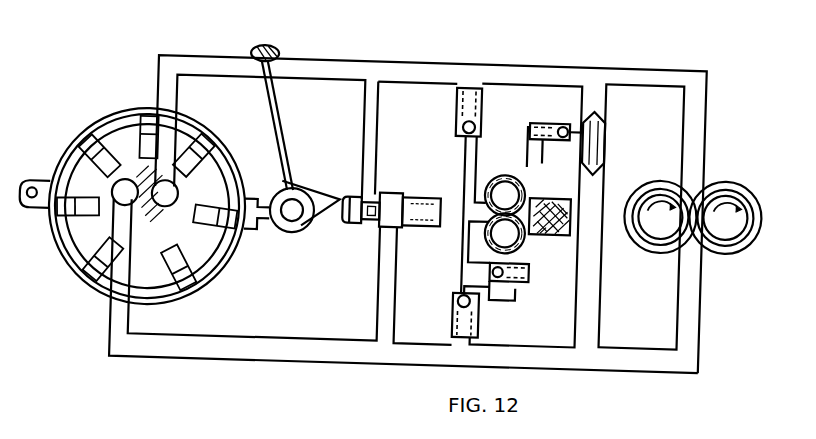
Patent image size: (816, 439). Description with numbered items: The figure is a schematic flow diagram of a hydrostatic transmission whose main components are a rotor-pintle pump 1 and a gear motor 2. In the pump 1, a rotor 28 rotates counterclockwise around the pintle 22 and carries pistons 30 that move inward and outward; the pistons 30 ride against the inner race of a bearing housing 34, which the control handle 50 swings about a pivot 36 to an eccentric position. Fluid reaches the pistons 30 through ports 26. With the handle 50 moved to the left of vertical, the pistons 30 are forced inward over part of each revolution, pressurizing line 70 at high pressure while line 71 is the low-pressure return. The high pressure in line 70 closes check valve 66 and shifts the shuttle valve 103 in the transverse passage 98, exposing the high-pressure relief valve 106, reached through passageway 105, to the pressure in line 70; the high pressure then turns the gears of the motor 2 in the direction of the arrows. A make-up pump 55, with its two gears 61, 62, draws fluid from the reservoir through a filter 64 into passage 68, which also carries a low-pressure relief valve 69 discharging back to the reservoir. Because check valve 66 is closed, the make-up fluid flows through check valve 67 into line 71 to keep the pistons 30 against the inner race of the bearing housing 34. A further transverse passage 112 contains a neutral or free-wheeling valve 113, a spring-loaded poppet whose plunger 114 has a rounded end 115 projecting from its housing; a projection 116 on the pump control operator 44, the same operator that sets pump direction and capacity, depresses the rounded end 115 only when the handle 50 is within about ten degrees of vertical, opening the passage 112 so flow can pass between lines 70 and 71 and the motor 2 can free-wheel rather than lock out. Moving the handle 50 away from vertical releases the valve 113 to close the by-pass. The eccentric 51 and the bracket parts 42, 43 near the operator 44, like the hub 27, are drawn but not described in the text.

The pump 1 is at (84, 107).
The gear motor 2 is at (731, 168).
The pintle 22 is at (154, 237).
The ports 26 is at (133, 169).
The outlet port 27 is at (192, 202).
The rotor 28 is at (122, 108).
The pistons 30 is at (189, 272).
The bearing housing 34 is at (235, 154).
The pivot 36 is at (31, 213).
The bracket 42 is at (256, 197).
The bracket notch 43 is at (264, 227).
The pump control operator 44 is at (290, 227).
The control handle 50 is at (293, 132).
The eccentric 51 is at (266, 43).
The make-up pump 55 is at (506, 162).
The gear 61 is at (518, 231).
The gear 62 is at (528, 180).
The filter 64 is at (568, 227).
The check valve 66 is at (484, 111).
The check valve 67 is at (487, 314).
The passage 68 is at (466, 244).
The relief valve 69 is at (524, 288).
The passageway 70 is at (538, 73).
The passageway 71 is at (542, 358).
The transverse passage 98 is at (609, 178).
The shuttle valve member 103 is at (609, 126).
The passageway 105 is at (569, 119).
The relief valve 106 is at (546, 110).
The transverse passage 112 is at (396, 269).
The free-wheeling valve 113 is at (387, 187).
The plunger 114 is at (373, 215).
The rounded end 115 is at (350, 218).
The projection 116 is at (325, 195).